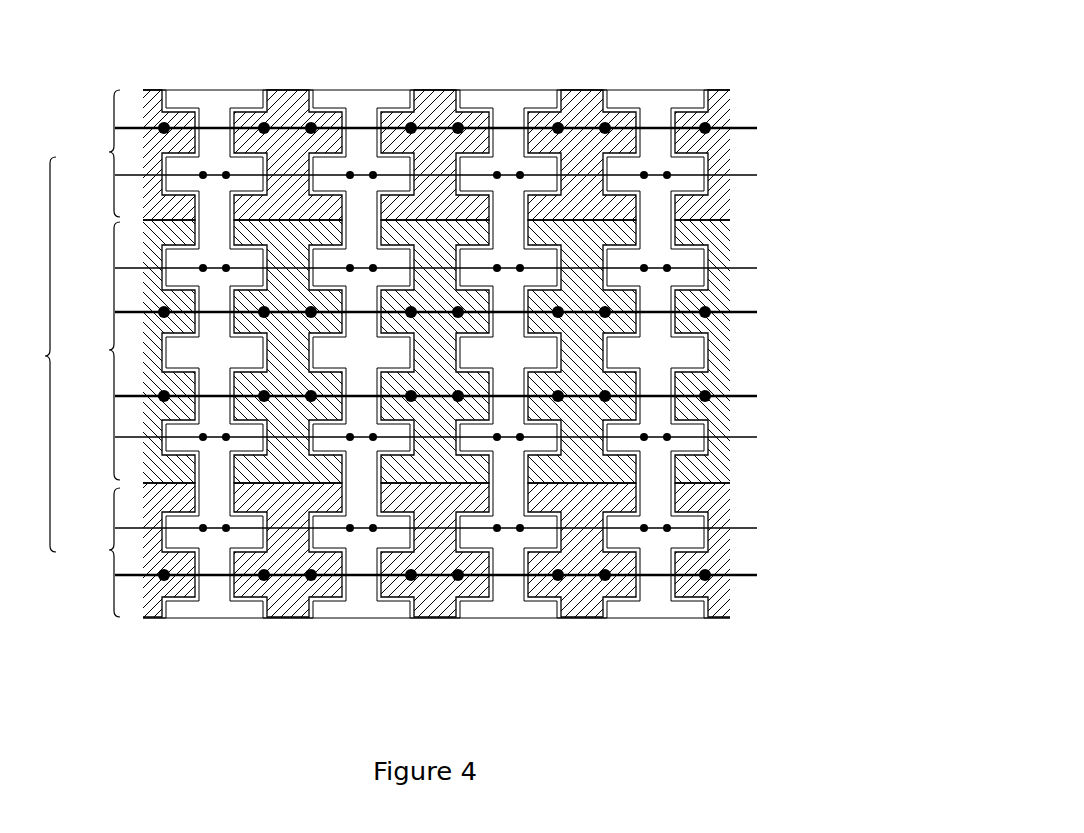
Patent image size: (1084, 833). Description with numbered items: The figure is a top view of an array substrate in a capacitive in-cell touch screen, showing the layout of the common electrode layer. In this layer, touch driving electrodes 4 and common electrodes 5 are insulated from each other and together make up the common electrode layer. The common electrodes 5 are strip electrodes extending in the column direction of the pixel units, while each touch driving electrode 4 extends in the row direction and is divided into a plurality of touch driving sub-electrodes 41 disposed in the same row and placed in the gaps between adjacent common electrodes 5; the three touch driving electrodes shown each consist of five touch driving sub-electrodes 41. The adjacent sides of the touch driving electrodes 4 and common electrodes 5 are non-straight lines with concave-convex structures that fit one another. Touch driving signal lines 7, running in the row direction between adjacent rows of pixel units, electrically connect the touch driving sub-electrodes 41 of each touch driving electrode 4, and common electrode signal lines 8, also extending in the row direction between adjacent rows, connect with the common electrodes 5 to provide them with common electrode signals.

The touch driving sub-electrode 41 is at (724, 92).
The touch driving electrode 4 is at (69, 353).
The common electrode 5 is at (667, 610).
The touch driving signal line 7 is at (738, 313).
The common electrode signal line 8 is at (738, 437).